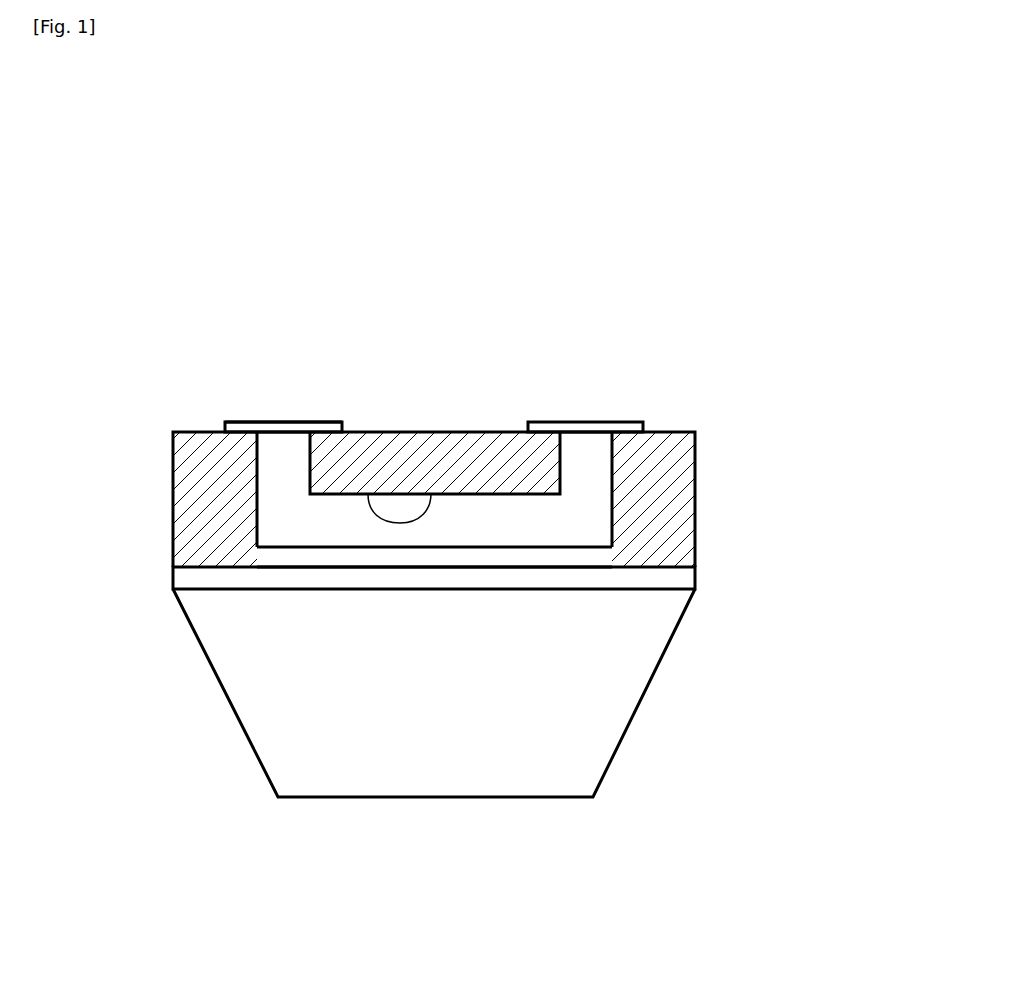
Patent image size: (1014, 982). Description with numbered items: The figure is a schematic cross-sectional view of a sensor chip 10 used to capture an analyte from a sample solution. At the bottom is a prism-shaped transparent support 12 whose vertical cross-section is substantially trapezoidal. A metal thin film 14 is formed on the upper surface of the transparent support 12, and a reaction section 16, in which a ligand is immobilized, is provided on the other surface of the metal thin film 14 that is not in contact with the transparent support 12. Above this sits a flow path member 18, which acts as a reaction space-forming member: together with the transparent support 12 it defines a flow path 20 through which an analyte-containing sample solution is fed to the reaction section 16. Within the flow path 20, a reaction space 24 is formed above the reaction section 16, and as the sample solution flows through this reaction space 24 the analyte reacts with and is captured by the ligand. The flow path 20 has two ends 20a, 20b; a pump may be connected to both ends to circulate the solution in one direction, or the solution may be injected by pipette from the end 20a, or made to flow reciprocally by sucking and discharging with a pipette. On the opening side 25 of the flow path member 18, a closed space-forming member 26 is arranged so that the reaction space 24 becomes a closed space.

The sensor chip 10 is at (581, 210).
The transparent support 12 is at (527, 697).
The metal thin film 14 is at (613, 577).
The reaction section 16 is at (286, 557).
The flow path member 18 is at (667, 480).
The flow path 20 is at (368, 493).
The end of the flow path 20a is at (290, 440).
The end of the flow path 20b is at (580, 440).
The reaction space 24 is at (460, 523).
The opening side 25 is at (467, 340).
The closed space-forming member 26 is at (253, 427).